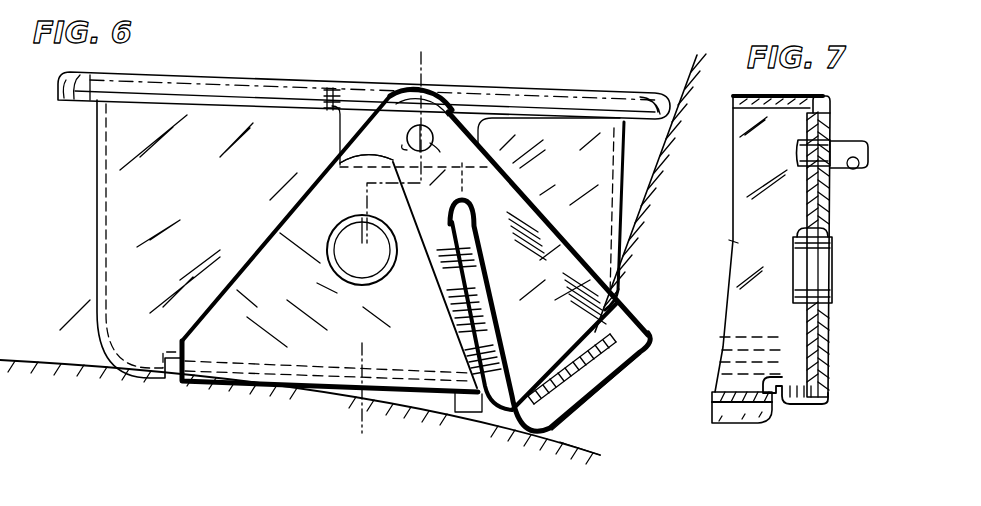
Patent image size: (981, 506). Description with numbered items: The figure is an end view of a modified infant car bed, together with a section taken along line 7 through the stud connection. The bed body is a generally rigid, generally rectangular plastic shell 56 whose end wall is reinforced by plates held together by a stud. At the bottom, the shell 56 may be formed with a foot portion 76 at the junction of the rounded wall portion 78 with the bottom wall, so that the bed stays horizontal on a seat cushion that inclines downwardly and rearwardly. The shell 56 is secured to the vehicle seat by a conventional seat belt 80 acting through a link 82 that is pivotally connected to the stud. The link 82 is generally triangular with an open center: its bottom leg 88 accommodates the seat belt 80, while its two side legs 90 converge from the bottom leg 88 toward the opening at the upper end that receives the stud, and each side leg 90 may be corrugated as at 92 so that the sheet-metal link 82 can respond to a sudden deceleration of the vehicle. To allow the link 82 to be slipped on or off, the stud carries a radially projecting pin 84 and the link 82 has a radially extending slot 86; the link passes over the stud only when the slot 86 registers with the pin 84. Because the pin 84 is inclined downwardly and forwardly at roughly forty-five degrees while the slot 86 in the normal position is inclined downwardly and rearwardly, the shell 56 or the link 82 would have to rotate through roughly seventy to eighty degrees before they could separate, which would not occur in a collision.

In FIG. 6, the shell 56 is at (199, 70).
In FIG. 6, the section line 7- 7 is at (421, 52).
In FIG. 6, the pin 84 is at (343, 154).
In FIG. 7, the pin 84 is at (818, 246).
In FIG. 6, the slot 86 is at (432, 148).
In FIG. 7, the slot 86 is at (833, 154).
In FIG. 6, the link 82 is at (518, 197).
In FIG. 6, the side leg 90 is at (387, 250).
In FIG. 6, the corrugation 92 is at (470, 312).
In FIG. 6, the rounded wall portion 78 is at (548, 352).
In FIG. 6, the bottom leg 88 is at (584, 404).
In FIG. 6, the seat belt 80 is at (586, 442).
In FIG. 6, the foot portion 76 is at (462, 410).